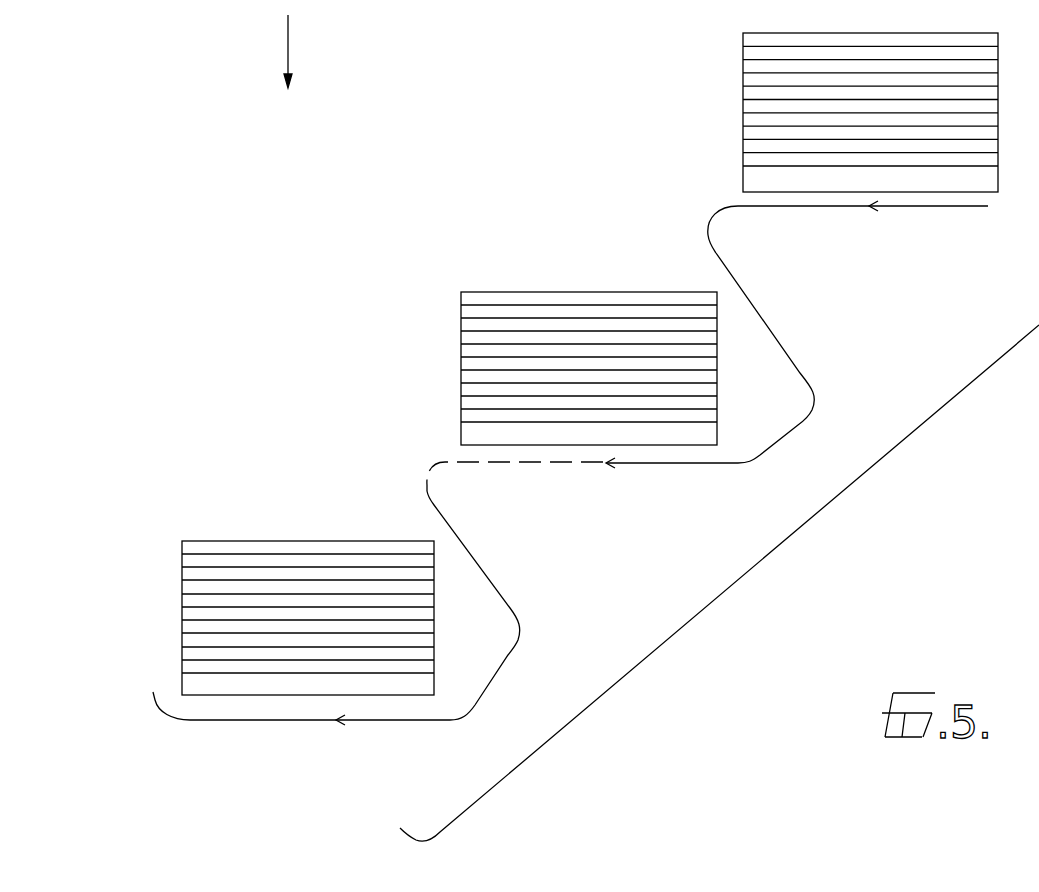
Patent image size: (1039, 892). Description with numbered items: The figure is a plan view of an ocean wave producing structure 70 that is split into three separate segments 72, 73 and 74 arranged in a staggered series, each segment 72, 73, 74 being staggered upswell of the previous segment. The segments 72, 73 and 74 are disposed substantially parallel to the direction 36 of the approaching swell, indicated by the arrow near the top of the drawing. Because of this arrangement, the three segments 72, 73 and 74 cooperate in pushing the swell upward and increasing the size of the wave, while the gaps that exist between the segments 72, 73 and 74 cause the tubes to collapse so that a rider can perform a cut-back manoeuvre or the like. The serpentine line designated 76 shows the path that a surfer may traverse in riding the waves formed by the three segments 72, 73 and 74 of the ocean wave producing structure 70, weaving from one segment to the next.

The direction of the swell 36 is at (288, 33).
The ocean wave producing structure 70 is at (457, 229).
The segment 72 is at (743, 118).
The segment 73 is at (477, 356).
The segment 74 is at (188, 590).
The surfer path line 76 is at (706, 480).